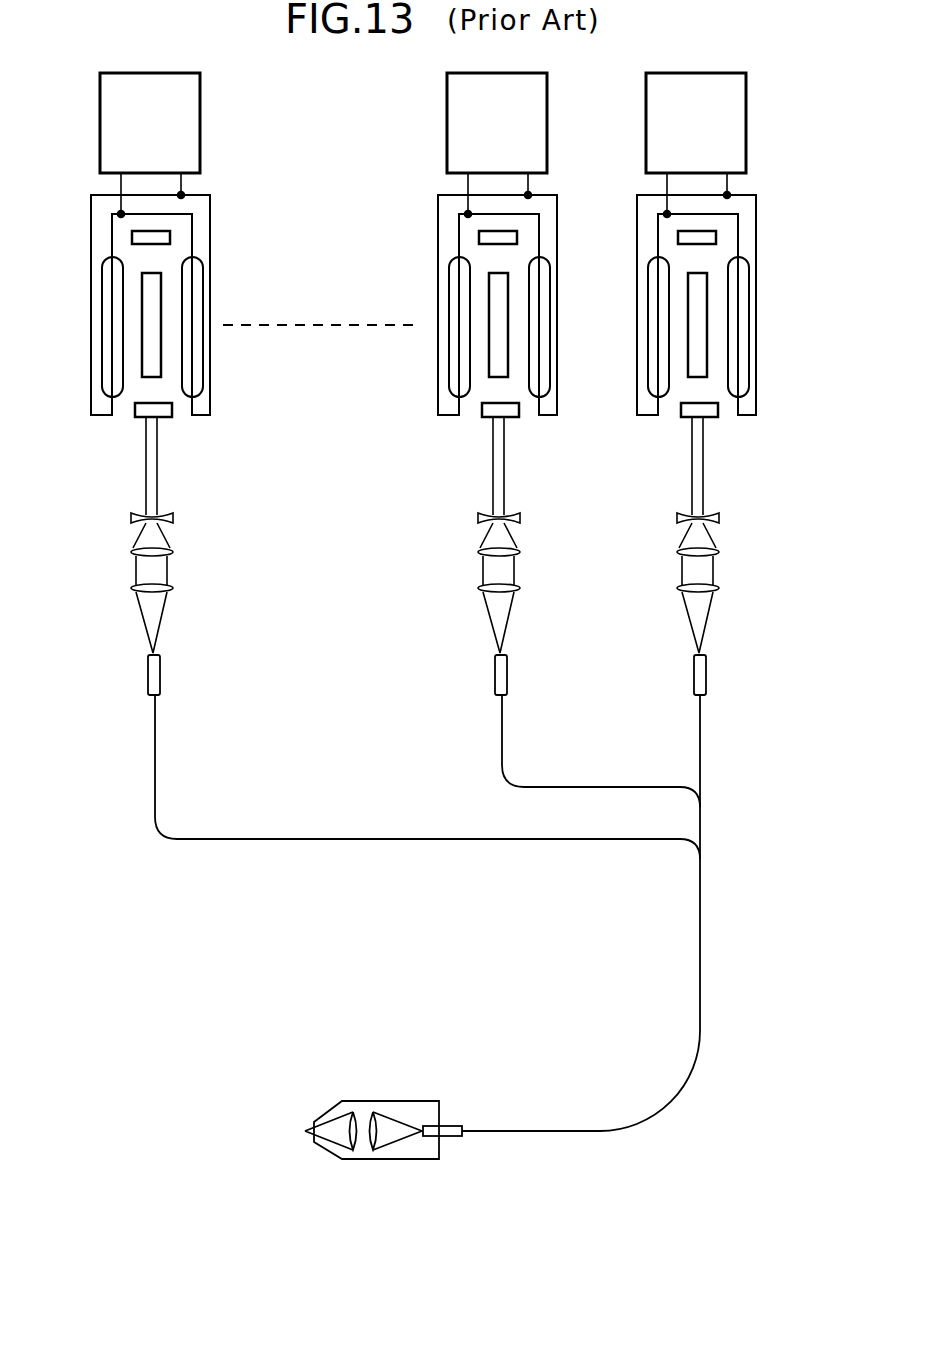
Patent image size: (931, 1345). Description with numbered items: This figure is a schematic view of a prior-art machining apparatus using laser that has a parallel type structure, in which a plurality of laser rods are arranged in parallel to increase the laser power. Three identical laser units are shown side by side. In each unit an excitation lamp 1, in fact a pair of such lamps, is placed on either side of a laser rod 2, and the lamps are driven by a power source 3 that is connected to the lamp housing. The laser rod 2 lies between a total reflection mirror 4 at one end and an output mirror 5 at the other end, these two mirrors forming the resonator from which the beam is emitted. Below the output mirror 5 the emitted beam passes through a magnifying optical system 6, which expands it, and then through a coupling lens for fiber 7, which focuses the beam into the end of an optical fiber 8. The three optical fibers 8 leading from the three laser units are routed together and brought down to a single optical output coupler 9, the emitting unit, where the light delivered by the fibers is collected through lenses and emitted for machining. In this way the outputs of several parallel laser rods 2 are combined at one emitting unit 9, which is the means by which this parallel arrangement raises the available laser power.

The excitation lamp 1 is at (102, 363).
The laser rod 2 is at (152, 288).
The power source 3 is at (200, 124).
The total reflection mirror 4 is at (170, 237).
The output mirror 5 is at (168, 417).
The magnifying optical system 6 is at (174, 518).
The coupling lens for fiber 7 is at (173, 588).
The optical fiber 8 is at (700, 918).
The optical output coupler (emitting unit) 9 is at (416, 1159).